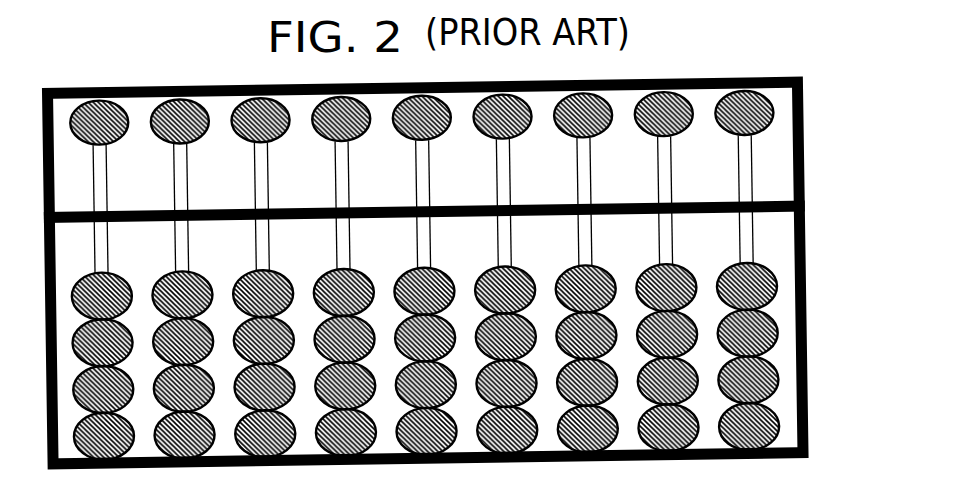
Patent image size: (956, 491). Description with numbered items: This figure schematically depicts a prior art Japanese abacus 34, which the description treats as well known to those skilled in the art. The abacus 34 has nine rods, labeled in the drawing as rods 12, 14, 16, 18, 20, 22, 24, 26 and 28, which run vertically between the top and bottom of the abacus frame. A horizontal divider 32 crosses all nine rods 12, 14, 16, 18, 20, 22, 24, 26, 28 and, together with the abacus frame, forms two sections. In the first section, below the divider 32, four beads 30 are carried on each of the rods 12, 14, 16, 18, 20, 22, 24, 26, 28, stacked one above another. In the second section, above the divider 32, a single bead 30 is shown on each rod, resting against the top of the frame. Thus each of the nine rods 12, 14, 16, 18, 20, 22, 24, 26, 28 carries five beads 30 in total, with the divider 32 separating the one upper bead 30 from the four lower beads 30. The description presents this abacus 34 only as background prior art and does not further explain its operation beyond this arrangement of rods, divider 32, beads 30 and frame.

The rod 12 is at (752, 230).
The rod 14 is at (671, 230).
The rod 16 is at (591, 230).
The rod 18 is at (510, 230).
The rod 20 is at (429, 230).
The rod 22 is at (349, 230).
The rod 24 is at (268, 230).
The rod 26 is at (187, 230).
The rod 28 is at (107, 230).
The bead 30 is at (780, 122).
The divider 32 is at (603, 211).
The Japanese abacus 34 is at (713, 76).